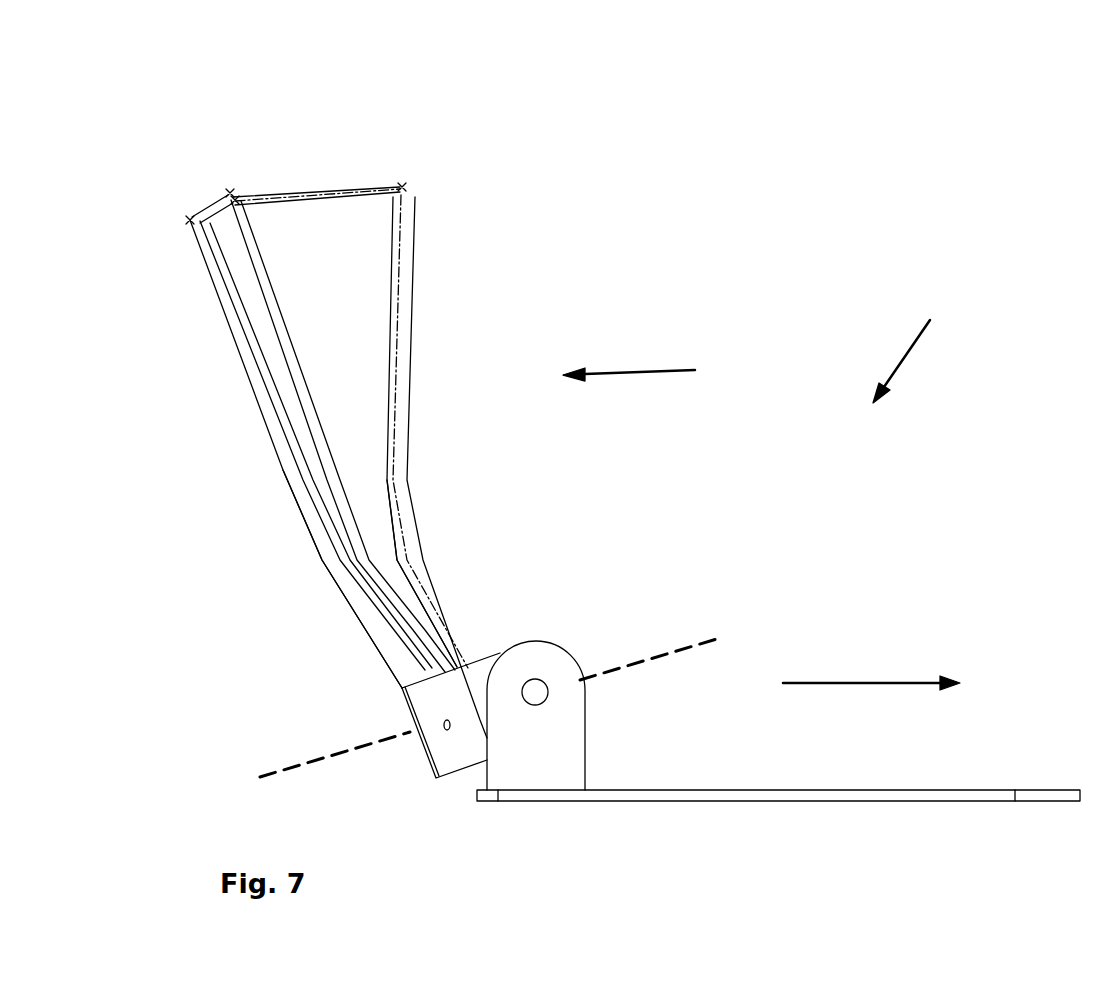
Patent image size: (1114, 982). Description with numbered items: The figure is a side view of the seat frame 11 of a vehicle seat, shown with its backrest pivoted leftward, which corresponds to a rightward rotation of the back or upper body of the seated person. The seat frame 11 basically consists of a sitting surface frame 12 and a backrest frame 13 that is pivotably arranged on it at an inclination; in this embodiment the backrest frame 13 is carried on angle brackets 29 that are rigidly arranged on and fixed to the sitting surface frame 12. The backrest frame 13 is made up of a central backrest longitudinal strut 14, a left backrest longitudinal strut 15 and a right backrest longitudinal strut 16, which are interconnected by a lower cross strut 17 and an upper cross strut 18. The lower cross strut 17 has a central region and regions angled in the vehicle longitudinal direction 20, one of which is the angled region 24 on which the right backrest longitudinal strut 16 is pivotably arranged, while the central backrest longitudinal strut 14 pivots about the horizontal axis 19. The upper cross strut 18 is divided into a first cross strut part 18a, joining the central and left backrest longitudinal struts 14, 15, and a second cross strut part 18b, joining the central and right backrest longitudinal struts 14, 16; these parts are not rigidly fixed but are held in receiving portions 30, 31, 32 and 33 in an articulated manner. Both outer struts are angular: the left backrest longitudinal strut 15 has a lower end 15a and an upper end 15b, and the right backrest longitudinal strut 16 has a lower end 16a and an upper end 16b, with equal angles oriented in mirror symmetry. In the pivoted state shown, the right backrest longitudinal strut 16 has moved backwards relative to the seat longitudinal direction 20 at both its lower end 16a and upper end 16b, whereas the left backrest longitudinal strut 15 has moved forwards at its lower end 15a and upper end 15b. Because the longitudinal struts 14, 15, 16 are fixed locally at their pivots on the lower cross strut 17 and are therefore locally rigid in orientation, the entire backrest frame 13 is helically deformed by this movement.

The seat frame 11 is at (912, 348).
The sitting surface frame 12 is at (807, 793).
The backrest frame 13 is at (651, 370).
The central backrest longitudinal strut 14 is at (288, 352).
The left backrest longitudinal strut 15 is at (465, 466).
The lower end of the left backrest longitudinal strut 15a is at (421, 558).
The upper end of the left backrest longitudinal strut 15b is at (407, 260).
The right backrest longitudinal strut 16 is at (267, 454).
The lower end of the right backrest longitudinal strut 16a is at (347, 602).
The upper end of the right backrest longitudinal strut 16b is at (226, 316).
The lower cross strut 17 is at (450, 760).
The upper cross strut 18 is at (258, 161).
The first cross strut part 18a is at (322, 190).
The second cross strut part 18b is at (213, 203).
The horizontal axis 19 is at (681, 645).
The vehicle longitudinal direction 20 is at (871, 671).
The angled region 24 is at (451, 749).
The angle bracket 29 is at (577, 733).
The receiving portion 30 is at (402, 187).
The receiving portion 31 is at (235, 200).
The receiving portion 32 is at (230, 192).
The receiving portion 33 is at (190, 218).